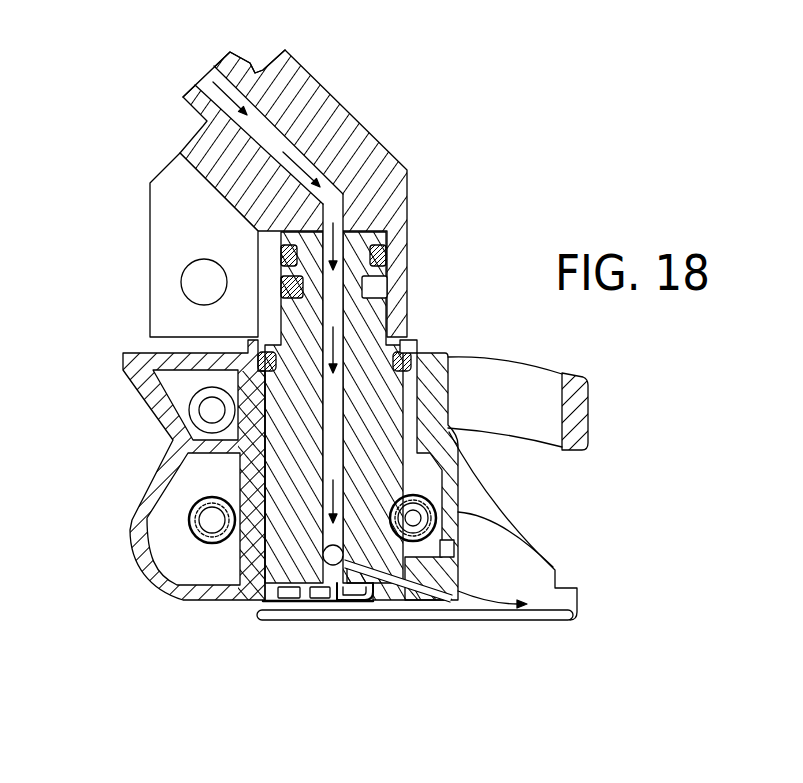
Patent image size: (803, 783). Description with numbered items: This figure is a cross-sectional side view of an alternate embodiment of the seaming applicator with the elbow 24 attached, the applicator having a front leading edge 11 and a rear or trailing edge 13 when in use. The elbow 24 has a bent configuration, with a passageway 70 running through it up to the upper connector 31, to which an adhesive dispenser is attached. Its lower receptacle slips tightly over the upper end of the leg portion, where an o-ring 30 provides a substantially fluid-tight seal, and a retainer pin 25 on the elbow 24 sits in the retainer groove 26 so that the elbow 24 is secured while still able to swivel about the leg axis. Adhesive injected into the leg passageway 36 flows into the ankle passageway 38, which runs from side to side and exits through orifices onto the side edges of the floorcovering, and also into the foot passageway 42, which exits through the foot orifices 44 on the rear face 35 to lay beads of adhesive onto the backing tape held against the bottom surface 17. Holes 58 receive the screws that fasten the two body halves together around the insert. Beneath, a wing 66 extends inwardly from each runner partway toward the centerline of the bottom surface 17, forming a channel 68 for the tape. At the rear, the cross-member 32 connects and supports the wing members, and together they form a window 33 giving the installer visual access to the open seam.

The front leading edge 11 is at (98, 478).
The rear or trailing edge 13 is at (580, 483).
The bottom surface 17 is at (238, 603).
The elbow 24 is at (404, 168).
The retainer pin 25 is at (282, 290).
The retainer groove 26 is at (390, 288).
The o-ring 30 is at (388, 252).
The upper connector 31 is at (261, 72).
The cross-member 32 is at (588, 384).
The window 33 is at (504, 395).
The rear face 35 is at (458, 547).
The leg passageway 36 is at (337, 335).
The ankle passageway 38 is at (327, 452).
The foot passageway 42 is at (403, 580).
The foot orifices 44 is at (459, 592).
The holes 58 is at (212, 520).
The wing 66 is at (360, 617).
The channel 68 is at (303, 607).
The passageway 70 is at (212, 69).